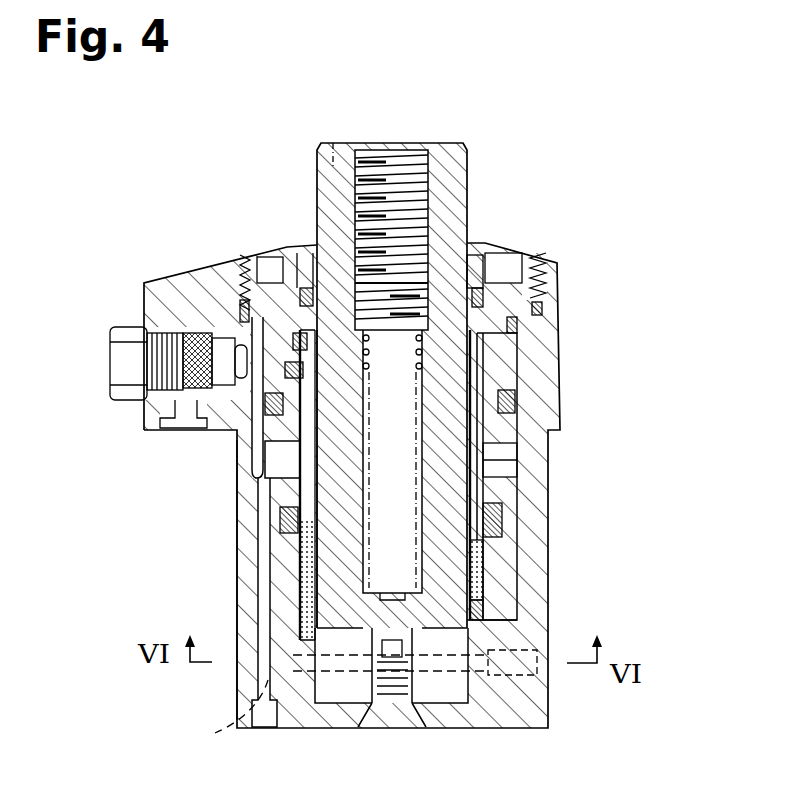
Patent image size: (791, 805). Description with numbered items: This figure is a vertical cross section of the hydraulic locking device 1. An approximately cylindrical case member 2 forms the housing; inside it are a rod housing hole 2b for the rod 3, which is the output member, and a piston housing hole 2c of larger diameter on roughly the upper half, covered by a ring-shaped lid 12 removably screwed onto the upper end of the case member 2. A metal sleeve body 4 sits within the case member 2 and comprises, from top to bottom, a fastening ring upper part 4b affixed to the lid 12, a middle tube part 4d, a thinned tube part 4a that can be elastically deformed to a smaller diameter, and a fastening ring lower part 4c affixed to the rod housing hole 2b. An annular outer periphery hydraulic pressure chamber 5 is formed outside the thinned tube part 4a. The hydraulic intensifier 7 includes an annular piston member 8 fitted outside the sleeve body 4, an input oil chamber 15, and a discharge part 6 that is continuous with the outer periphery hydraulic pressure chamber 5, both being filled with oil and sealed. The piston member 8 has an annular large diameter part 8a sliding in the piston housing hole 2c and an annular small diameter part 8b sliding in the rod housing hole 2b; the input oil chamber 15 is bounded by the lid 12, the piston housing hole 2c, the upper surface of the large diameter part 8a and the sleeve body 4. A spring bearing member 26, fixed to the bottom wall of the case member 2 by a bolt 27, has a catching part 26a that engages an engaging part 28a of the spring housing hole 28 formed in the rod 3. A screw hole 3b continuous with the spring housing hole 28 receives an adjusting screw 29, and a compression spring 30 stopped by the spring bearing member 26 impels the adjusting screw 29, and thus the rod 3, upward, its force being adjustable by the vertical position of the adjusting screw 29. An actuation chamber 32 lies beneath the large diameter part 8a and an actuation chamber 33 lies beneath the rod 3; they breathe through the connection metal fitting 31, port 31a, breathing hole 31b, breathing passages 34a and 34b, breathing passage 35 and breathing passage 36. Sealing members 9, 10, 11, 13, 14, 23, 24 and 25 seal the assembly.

The hydraulic locking device 1 is at (608, 117).
The case member 2 is at (548, 705).
The rod housing hole 2b is at (313, 503).
The piston housing hole 2c is at (180, 418).
The rod 3 is at (473, 172).
The screw hole 3b is at (374, 185).
The sleeve body 4 is at (458, 502).
The thinned tube part 4a is at (467, 597).
The fastening ring upper part 4b is at (493, 283).
The fastening ring lower part 4c is at (512, 627).
The middle tube part 4d is at (462, 395).
The outer periphery hydraulic pressure chamber 5 is at (313, 478).
The discharge part 6 is at (237, 600).
The hydraulic intensifier 7 is at (326, 335).
The piston member 8 is at (582, 459).
The large diameter part 8a is at (500, 452).
The small diameter part 8b is at (505, 458).
The sealing member 9 is at (505, 402).
The sealing member 10 is at (517, 352).
The sealing member 11 is at (500, 520).
The lid 12 is at (530, 265).
The sealing member 13 is at (535, 302).
The sealing member 14 is at (517, 323).
The input oil chamber 15 is at (302, 262).
The sealing member 23 is at (475, 265).
The sealing member 24 is at (475, 307).
The sealing member 25 is at (510, 597).
The spring bearing member 26 is at (420, 690).
The catching part 26a is at (381, 695).
The bolt 27 is at (408, 718).
The spring housing hole 28 is at (411, 491).
The engaging part 28a is at (352, 640).
The adjusting screw 29 is at (397, 293).
The compression spring 30 is at (378, 552).
The connection metal fitting 31 is at (152, 297).
The port 31a is at (229, 348).
The breathing hole 31b is at (165, 398).
The actuation chamber 32 is at (273, 453).
The actuation chamber 33 is at (337, 696).
The breathing passage 34a is at (242, 262).
The breathing passage 34b is at (292, 528).
The breathing passage 35 is at (253, 467).
The breathing passage 36 is at (228, 723).